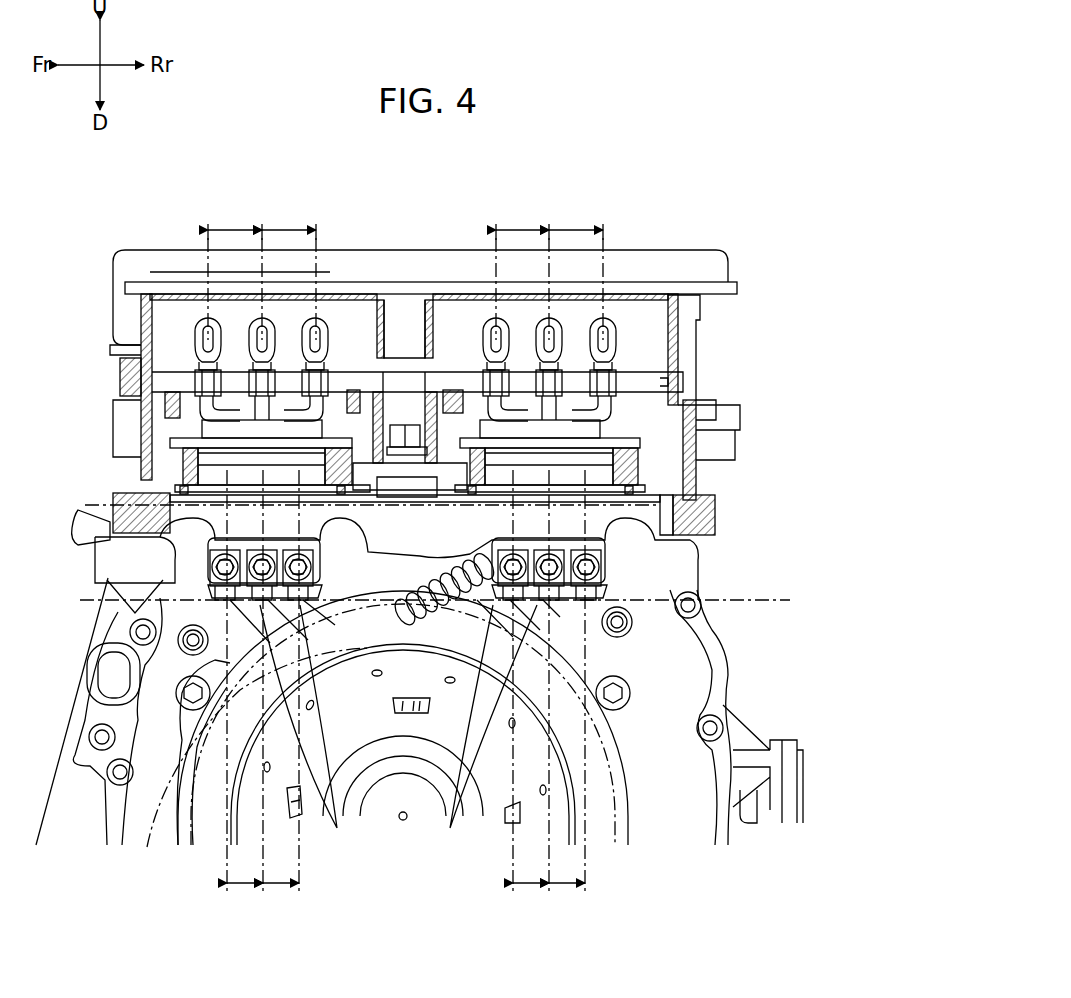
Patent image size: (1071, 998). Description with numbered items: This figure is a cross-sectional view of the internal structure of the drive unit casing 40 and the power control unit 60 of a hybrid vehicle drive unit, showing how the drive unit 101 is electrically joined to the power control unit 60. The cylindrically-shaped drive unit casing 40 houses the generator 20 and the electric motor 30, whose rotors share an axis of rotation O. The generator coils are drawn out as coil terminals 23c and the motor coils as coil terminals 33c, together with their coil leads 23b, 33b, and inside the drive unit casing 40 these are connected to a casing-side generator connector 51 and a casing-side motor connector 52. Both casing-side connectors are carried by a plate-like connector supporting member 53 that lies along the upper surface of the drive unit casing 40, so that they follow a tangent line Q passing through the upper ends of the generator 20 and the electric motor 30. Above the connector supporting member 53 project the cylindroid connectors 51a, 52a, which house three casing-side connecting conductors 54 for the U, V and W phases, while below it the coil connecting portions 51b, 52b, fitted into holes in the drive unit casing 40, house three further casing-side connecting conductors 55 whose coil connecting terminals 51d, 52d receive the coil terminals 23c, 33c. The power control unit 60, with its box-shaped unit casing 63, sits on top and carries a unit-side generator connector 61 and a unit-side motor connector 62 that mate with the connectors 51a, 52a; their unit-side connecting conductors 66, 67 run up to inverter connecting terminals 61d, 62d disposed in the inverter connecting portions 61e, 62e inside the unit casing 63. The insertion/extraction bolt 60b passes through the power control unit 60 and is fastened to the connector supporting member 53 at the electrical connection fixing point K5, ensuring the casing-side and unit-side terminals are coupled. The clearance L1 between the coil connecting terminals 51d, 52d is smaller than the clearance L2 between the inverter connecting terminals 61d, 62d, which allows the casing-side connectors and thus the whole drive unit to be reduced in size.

The drive unit 101 is at (744, 188).
The power control unit 60 is at (690, 246).
The unit casing 63 is at (350, 250).
The insertion/extraction bolt 60b is at (408, 344).
The electrical connection fixing point K5 is at (400, 426).
The inverter connecting terminals 61d is at (312, 317).
The inverter connecting portion 61e is at (200, 386).
The inverter connecting terminals 62d is at (500, 317).
The inverter connecting portion 62e is at (570, 386).
The unit-side connecting conductors 66 is at (170, 398).
The unit-side generator connector 61 is at (200, 430).
The casing-side generator connector 51 is at (190, 469).
The connector 51a is at (200, 467).
The unit-side connecting conductors 67 is at (655, 410).
The unit-side motor connector 62 is at (660, 438).
The casing-side motor connector 52 is at (656, 448).
The connector 52a is at (602, 472).
The casing-side connecting conductors 55 is at (605, 487).
The casing-side connecting conductors 54 is at (110, 525).
The connector supporting member 53 is at (628, 508).
The coil connecting portion 51b is at (170, 556).
The coil connecting terminals 51d is at (295, 588).
The coil connecting portion 52b is at (605, 553).
The coil connecting terminals 52d is at (560, 592).
The tangent line Q is at (780, 602).
The drive unit casing 40 is at (730, 683).
The first coil lead 23b is at (308, 713).
The second coil lead 33b is at (175, 795).
The coil terminals 23c is at (340, 825).
The axis of rotation O is at (403, 821).
The coil terminals 33c is at (452, 825).
The generator 20 is at (403, 788).
The electric motor 30 is at (403, 788).
The clearance L1 is at (406, 690).
The clearance L2 is at (405, 271).